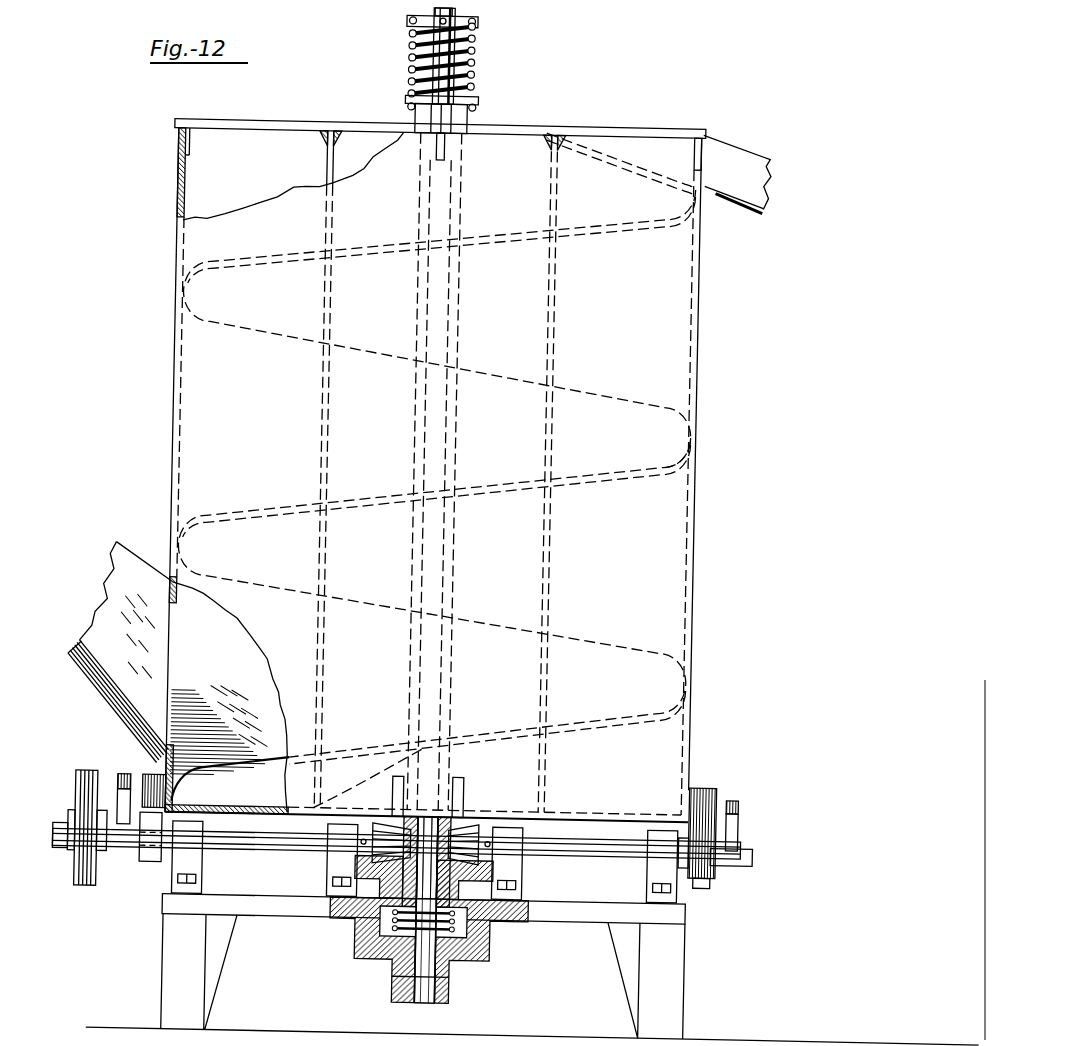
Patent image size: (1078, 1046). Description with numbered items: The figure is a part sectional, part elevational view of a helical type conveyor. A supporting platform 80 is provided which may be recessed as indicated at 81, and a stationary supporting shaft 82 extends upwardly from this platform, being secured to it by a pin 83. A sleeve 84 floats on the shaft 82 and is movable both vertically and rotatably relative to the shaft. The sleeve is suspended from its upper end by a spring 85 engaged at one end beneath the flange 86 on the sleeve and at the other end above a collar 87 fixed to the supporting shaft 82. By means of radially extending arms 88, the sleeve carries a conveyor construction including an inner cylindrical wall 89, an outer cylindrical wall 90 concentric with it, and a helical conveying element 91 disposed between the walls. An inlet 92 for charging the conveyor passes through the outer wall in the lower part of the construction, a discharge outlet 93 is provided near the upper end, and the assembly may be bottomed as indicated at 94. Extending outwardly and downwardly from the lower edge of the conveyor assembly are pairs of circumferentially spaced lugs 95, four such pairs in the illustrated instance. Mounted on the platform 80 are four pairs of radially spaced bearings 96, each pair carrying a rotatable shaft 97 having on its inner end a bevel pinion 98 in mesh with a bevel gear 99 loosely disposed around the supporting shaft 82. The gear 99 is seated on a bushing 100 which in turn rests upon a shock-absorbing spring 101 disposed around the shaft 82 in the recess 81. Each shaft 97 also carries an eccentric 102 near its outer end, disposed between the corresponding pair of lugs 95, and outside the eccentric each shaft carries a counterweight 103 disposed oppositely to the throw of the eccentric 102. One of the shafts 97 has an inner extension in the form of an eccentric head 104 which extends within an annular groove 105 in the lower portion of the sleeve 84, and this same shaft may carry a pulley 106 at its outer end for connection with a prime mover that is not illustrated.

The supporting platform 80 is at (277, 906).
The recess 81 is at (498, 946).
The stationary supporting shaft 82 is at (439, 552).
The pin 83 is at (456, 978).
The sleeve 84 is at (450, 412).
The spring 85 is at (466, 66).
The flange 86 is at (471, 98).
The collar 87 is at (469, 24).
The radially extending arms 88 is at (297, 124).
The inner cylindrical wall 89 is at (325, 165).
The outer cylindrical wall 90 is at (177, 195).
The helical conveying element 91 is at (640, 419).
The inlet 92 is at (172, 658).
The discharge outlet 93 is at (718, 156).
The bottom 94 is at (237, 812).
The lugs 95 is at (402, 788).
The bearings 96 is at (660, 869).
The rotatable shaft 97 is at (303, 841).
The bevel pinion 98 is at (479, 821).
The bevel gear 99 is at (412, 878).
The bushing 100 is at (455, 892).
The shock-absorbing spring 101 is at (493, 929).
The eccentric 102 is at (712, 873).
The counterweight 103 is at (740, 812).
The eccentric head 104 is at (410, 836).
The annular groove 105 is at (472, 819).
The pulley 106 is at (86, 889).